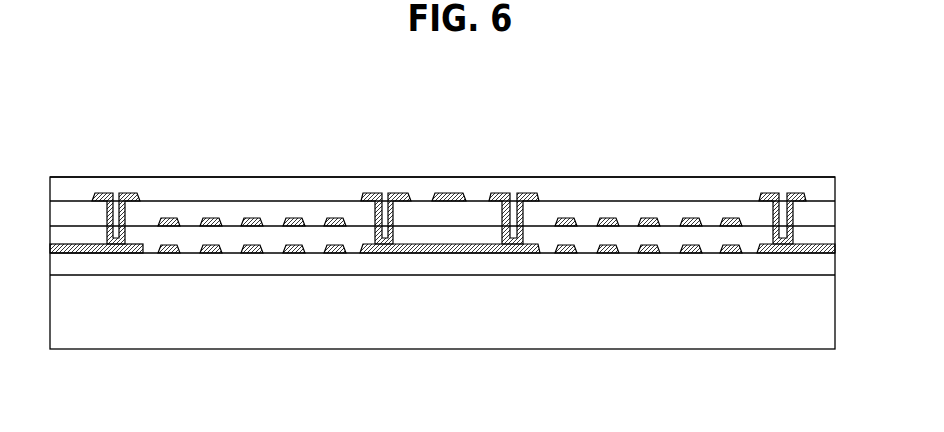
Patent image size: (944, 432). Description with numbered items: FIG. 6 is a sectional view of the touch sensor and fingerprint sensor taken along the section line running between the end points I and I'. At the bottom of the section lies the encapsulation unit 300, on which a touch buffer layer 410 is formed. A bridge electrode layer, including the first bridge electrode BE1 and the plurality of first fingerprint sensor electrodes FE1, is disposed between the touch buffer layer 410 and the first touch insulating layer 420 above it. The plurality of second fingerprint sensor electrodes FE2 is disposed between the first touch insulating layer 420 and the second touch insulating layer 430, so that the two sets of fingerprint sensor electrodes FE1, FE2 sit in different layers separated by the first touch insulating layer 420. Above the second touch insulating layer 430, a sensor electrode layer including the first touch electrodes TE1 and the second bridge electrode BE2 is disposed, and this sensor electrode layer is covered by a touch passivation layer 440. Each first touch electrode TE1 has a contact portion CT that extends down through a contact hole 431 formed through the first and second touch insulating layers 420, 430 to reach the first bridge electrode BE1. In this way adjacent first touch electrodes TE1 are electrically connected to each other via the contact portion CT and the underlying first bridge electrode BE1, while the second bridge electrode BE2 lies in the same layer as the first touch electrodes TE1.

The encapsulation unit 300 is at (836, 296).
The touch buffer layer 410 is at (836, 262).
The first touch insulating layer 420 is at (836, 238).
The second touch insulating layer 430 is at (836, 211).
The contact hole 431 is at (94, 253).
The touch passivation layer 440 is at (836, 188).
The first touch electrode TE1 is at (93, 193).
The first bridge electrode BE1 is at (122, 256).
The second bridge electrode BE2 is at (443, 192).
The first fingerprint sensor electrode FE1 is at (258, 244).
The second fingerprint sensor electrode FE2 is at (213, 219).
The contact portion CT is at (116, 190).
The section line start point I is at (48, 367).
The section line end point I' is at (836, 367).